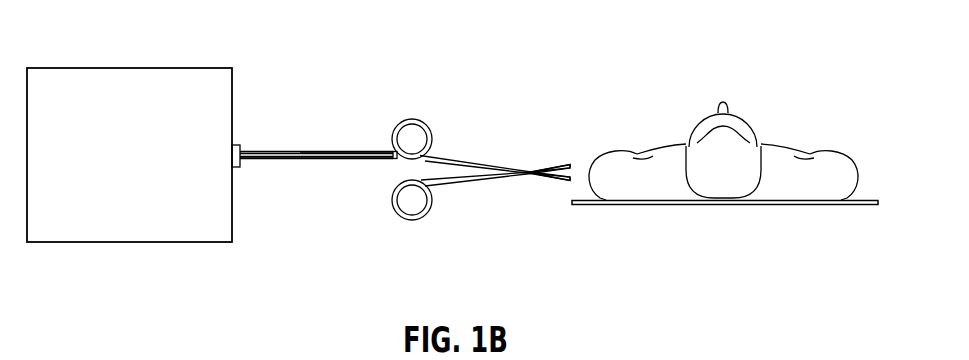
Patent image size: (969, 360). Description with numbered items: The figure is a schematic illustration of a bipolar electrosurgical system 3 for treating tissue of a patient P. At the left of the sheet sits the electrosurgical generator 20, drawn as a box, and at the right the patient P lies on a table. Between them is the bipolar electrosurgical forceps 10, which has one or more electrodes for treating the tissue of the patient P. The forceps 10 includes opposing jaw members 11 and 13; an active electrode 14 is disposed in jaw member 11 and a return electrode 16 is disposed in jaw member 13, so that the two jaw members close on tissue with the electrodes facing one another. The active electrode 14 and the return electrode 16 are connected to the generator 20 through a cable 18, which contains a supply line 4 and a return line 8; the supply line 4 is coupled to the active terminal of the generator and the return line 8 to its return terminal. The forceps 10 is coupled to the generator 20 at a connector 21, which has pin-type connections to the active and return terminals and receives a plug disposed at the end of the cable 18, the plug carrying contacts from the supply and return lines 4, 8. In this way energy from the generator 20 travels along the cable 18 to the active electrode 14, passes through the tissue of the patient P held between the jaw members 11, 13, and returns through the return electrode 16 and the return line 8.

The electrosurgical system 3 is at (378, 37).
The generator 20 is at (115, 67).
The connector 21 is at (237, 145).
The return line 8 is at (271, 152).
The cable 18 is at (329, 152).
The supply line 4 is at (278, 159).
The bipolar electrosurgical forceps 10 is at (455, 157).
The jaw member 11 is at (620, 261).
The return electrode 16 is at (529, 221).
The active electrode 14 is at (620, 233).
The jaw member 13 is at (584, 210).
The patient P is at (791, 135).